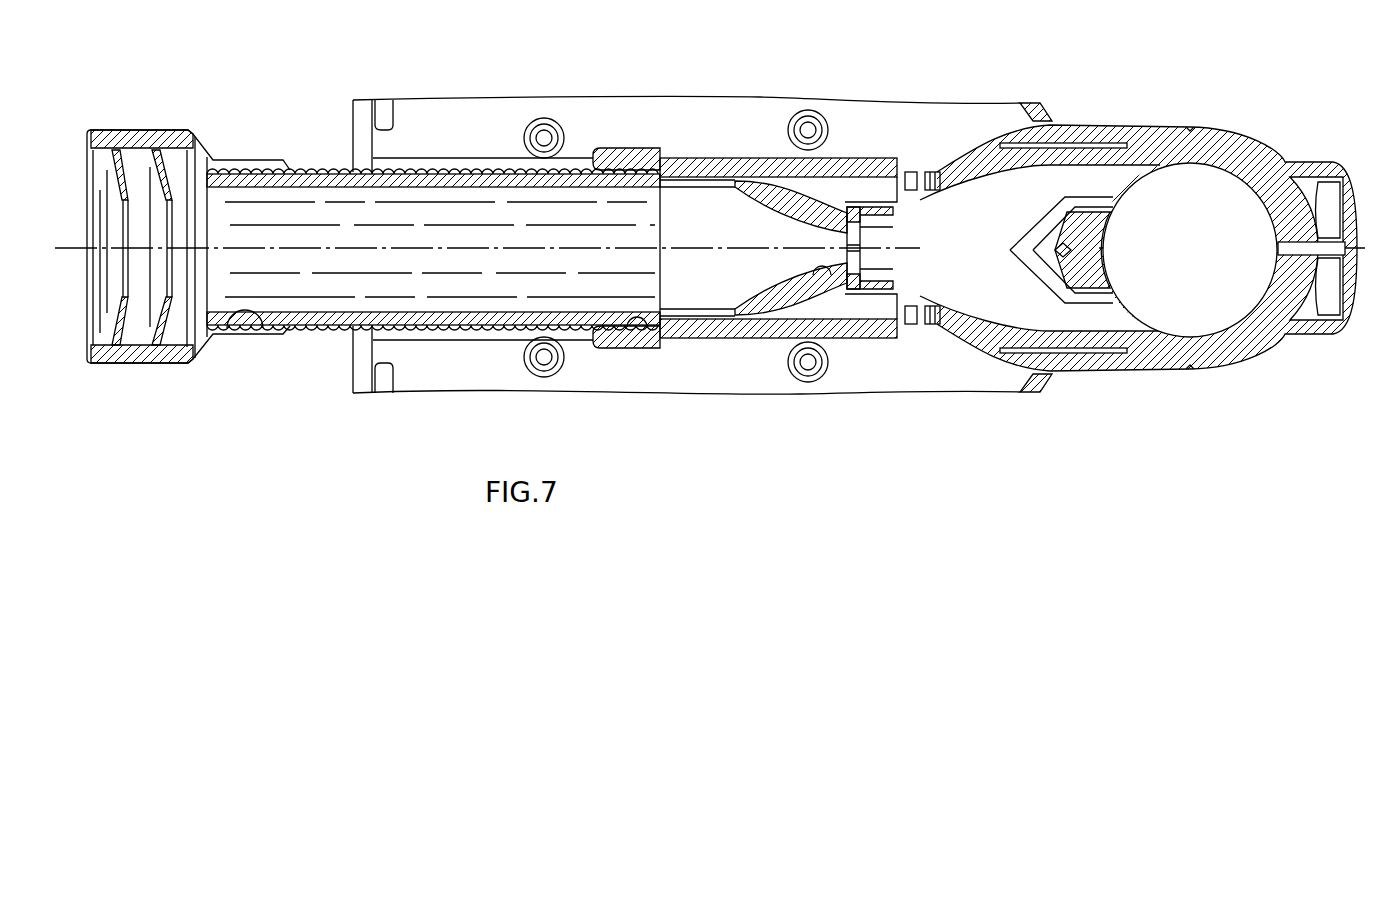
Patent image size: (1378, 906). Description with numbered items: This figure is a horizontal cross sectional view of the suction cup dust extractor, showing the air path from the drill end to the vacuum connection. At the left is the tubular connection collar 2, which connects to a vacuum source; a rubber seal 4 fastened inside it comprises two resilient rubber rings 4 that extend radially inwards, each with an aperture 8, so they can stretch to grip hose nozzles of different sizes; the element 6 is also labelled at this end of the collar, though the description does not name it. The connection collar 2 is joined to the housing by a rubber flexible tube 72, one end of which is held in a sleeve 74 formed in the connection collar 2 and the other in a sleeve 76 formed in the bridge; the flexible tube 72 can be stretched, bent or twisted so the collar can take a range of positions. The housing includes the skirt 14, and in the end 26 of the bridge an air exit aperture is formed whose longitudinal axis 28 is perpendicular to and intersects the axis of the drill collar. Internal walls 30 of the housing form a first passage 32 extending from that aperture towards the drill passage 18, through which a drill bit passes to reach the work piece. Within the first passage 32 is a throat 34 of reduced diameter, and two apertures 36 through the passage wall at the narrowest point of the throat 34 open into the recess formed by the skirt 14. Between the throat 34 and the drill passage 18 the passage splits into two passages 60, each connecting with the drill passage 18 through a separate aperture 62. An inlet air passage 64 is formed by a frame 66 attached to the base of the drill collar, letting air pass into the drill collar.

The connection collar 2 is at (147, 140).
The rubber seal 4 is at (117, 168).
The cap 6 is at (97, 138).
The aperture 8 is at (166, 273).
The skirt 14 is at (690, 118).
The drill passage 18 is at (1232, 233).
The end of the bridge 26 is at (592, 152).
The longitudinal axis 28 is at (432, 248).
The internal walls 30 is at (758, 298).
The first passage 32 is at (688, 239).
The throat 34 is at (833, 272).
The apertures 36 is at (858, 268).
The passages 60 is at (1092, 177).
The aperture 62 is at (1133, 191).
The inlet air passage 64 is at (1325, 205).
The frame 66 is at (1305, 323).
The flexible tube 72 is at (308, 332).
The sleeve 74 is at (265, 332).
The sleeve 76 is at (645, 316).